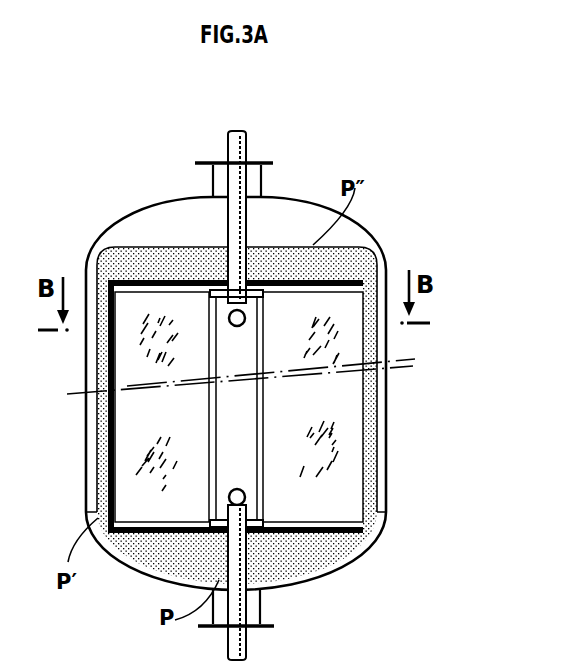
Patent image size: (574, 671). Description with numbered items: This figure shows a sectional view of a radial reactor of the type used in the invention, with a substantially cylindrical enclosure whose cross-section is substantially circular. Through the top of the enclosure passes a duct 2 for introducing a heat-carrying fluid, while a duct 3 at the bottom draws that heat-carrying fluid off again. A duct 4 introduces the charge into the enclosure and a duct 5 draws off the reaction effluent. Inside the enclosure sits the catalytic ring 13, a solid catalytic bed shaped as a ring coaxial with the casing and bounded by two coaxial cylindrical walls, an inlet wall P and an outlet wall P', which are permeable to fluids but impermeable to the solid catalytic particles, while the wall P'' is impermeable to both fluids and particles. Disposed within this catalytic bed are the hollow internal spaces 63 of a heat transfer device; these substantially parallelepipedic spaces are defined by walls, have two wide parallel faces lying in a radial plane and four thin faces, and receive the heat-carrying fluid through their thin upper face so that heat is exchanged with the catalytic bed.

The duct for introducing a heat-carrying fluid 2 is at (246, 138).
The duct for drawing off the heat-carrying fluid 3 is at (246, 645).
The duct for introducing a charge 4 is at (261, 607).
The duct for drawing off the reaction effluent 5 is at (262, 175).
The catalytic ring 13 is at (322, 552).
The hollow internal spaces 63 is at (123, 352).